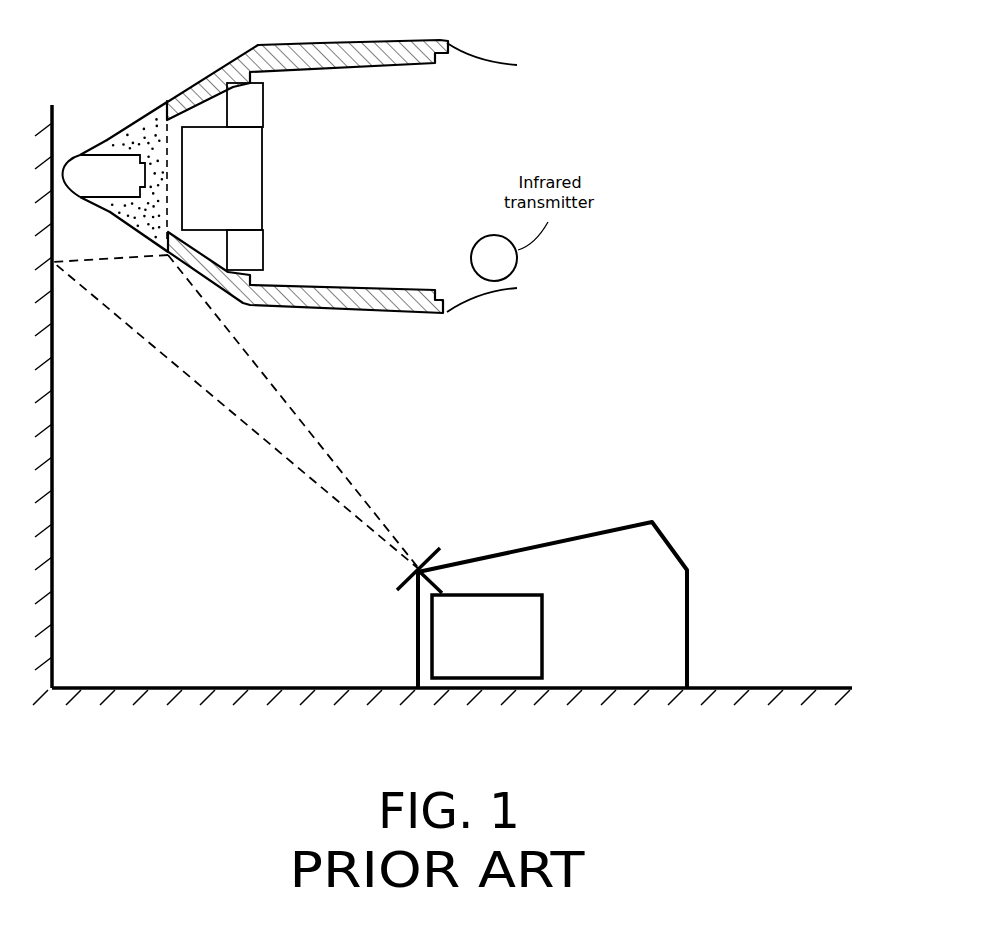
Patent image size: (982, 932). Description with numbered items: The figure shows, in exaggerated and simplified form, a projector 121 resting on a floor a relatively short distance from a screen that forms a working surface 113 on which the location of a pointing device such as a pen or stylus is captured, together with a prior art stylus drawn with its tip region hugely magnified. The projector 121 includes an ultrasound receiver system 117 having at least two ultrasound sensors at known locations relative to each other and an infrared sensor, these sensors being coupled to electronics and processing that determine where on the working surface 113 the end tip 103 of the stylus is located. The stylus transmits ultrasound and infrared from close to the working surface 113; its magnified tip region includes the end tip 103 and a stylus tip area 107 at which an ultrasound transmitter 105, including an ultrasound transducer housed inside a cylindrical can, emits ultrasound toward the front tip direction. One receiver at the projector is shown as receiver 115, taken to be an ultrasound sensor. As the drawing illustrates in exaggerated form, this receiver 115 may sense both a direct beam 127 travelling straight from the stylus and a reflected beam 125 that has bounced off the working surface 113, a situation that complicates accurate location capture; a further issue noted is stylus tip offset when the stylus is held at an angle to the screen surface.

The end tip 103 is at (58, 178).
The ultrasound transmitter 105 is at (243, 198).
The stylus tip area 107 is at (252, 328).
The working surface 113 is at (55, 438).
The receiver 115 is at (418, 560).
The ultrasound receiver system 117 is at (542, 610).
The projector 121 is at (673, 535).
The reflected beam 125 is at (263, 437).
The direct beam 127 is at (292, 408).